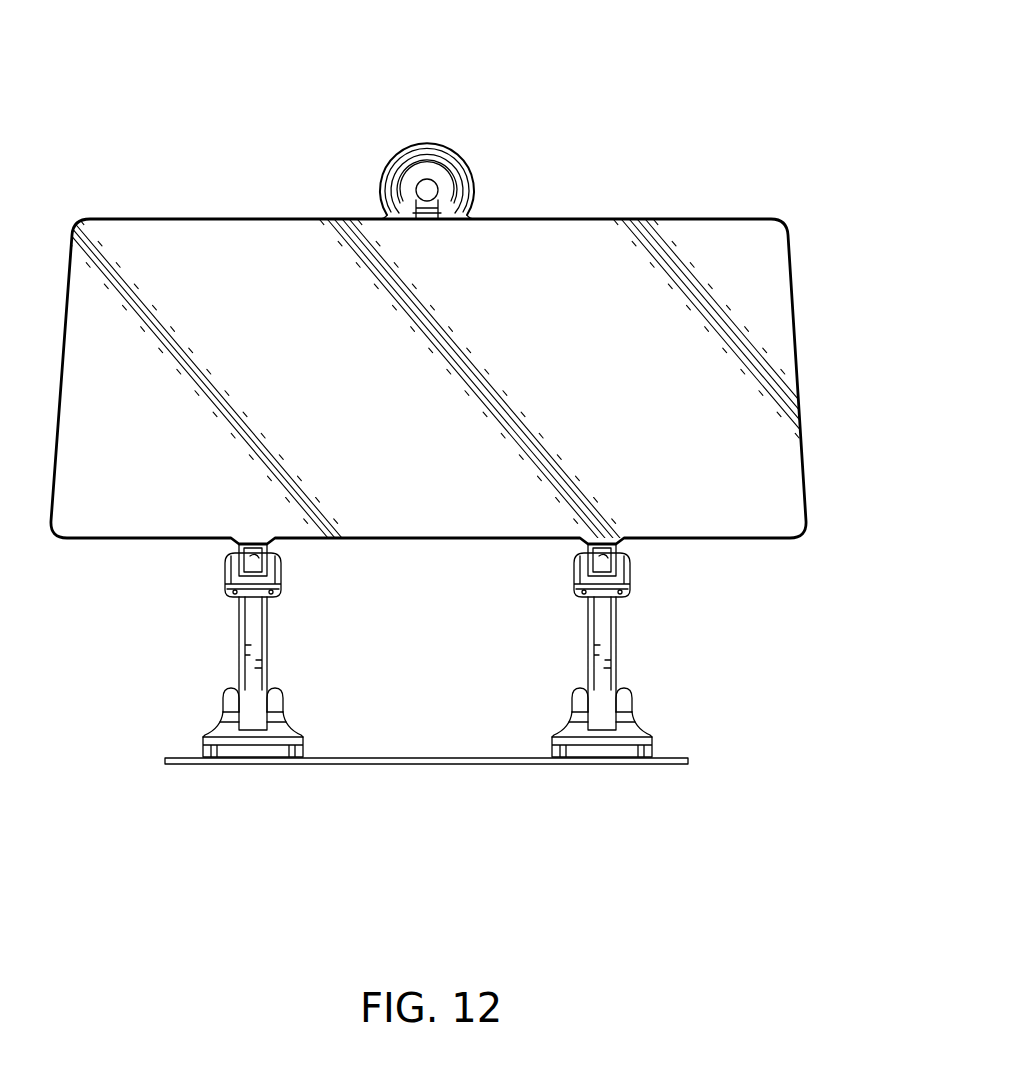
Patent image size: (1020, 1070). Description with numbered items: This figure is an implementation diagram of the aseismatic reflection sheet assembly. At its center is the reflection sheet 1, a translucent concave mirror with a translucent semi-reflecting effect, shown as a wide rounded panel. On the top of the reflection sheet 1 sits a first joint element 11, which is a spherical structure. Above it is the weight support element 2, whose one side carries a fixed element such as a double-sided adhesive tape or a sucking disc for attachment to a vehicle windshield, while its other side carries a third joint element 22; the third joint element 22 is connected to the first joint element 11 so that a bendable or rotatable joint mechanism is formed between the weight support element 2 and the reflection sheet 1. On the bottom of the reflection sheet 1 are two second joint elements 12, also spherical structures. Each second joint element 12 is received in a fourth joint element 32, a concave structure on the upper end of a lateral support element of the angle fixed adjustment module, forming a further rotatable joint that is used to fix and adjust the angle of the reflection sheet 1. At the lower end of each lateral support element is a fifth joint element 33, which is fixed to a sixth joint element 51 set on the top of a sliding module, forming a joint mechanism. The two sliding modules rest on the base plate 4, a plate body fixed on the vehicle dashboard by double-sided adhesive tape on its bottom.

The reflection sheet 1 is at (770, 317).
The weight support element 2 is at (416, 113).
The third joint element 22 is at (422, 192).
The first joint element 11 is at (417, 188).
The second joint element 12 is at (684, 561).
The fourth joint element 32 is at (685, 582).
The sixth joint element 51 is at (646, 688).
The fifth joint element 33 is at (659, 732).
The base plate 4 is at (628, 763).